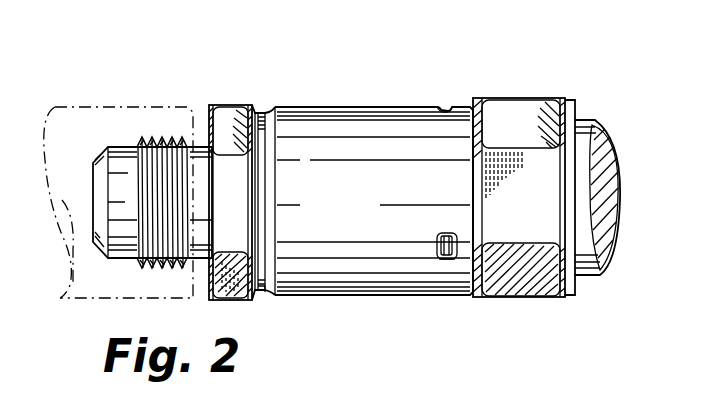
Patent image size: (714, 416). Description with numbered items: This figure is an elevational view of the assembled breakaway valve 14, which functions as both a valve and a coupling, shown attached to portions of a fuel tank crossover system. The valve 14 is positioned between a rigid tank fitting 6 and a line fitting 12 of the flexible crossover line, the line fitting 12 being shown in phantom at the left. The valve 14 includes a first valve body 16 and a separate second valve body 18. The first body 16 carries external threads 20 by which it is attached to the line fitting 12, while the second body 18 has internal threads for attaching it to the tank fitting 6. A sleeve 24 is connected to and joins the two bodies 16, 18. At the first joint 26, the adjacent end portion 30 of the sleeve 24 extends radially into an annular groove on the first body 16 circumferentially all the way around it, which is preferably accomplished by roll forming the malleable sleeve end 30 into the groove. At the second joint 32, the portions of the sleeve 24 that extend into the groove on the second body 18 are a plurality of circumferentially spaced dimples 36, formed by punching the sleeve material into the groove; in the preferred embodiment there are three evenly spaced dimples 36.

The tank fitting 6 is at (591, 122).
The line fitting 12 is at (150, 100).
The breakaway valve 14 is at (440, 82).
The first valve body 16 is at (230, 110).
The second valve body 18 is at (518, 108).
The external threads 20 is at (147, 137).
The sleeve 24 is at (362, 214).
The first joint 26 is at (262, 104).
The end portion of the sleeve 30 is at (263, 292).
The second joint 32 is at (448, 262).
The dimples 36 is at (449, 106).